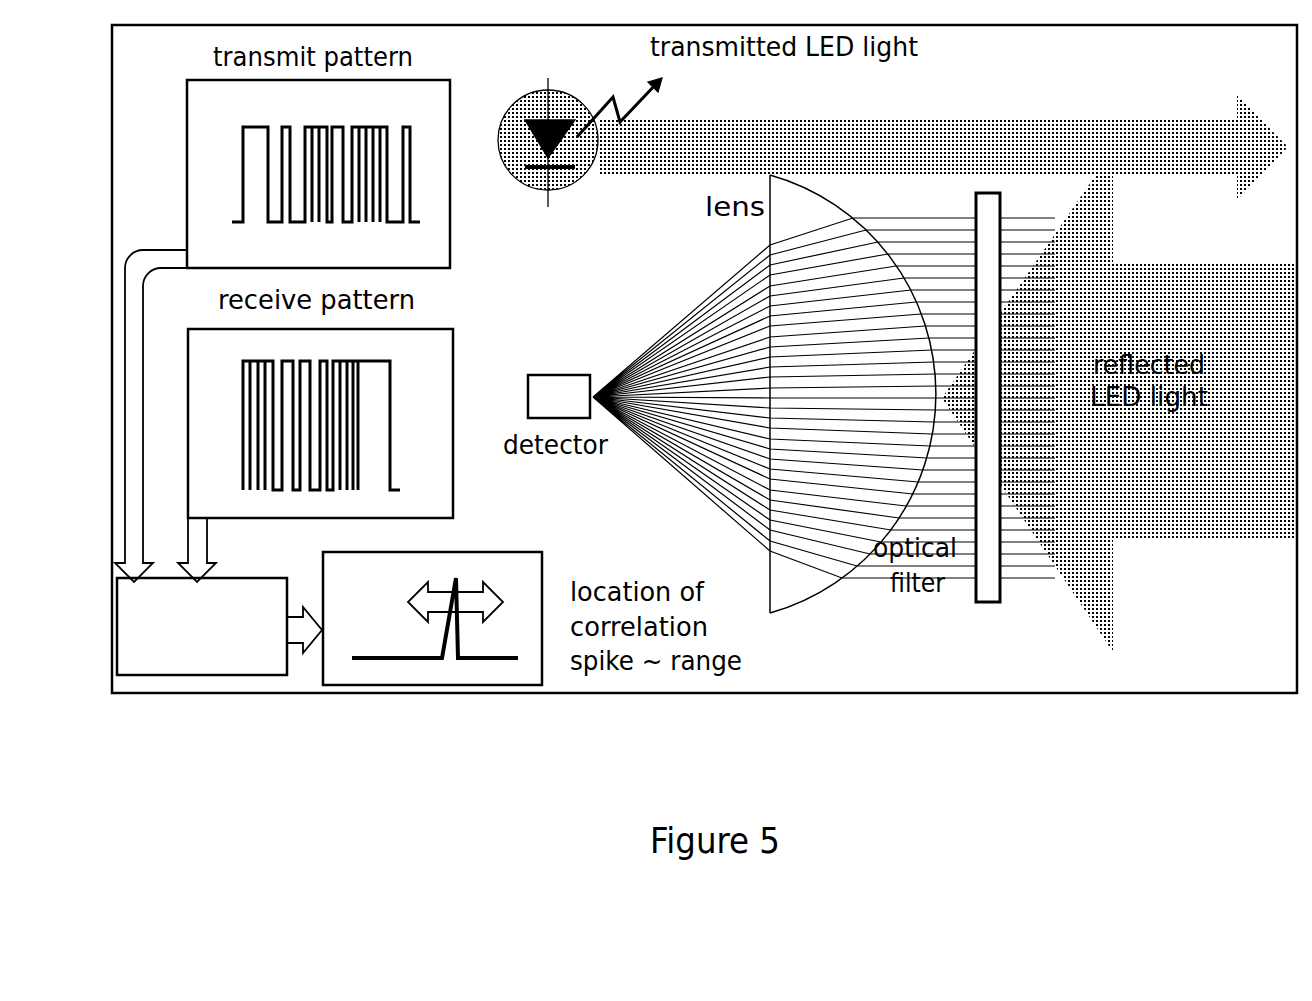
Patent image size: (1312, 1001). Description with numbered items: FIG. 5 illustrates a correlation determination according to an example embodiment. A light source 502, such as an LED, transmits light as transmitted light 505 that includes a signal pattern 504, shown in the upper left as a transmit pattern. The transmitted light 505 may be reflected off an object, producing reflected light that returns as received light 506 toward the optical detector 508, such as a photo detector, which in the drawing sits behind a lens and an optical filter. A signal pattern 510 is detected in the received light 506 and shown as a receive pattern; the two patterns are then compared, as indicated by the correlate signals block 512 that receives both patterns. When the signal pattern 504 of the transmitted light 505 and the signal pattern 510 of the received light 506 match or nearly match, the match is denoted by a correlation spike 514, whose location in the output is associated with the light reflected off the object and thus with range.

The light source 502 is at (532, 90).
The signal pattern 504 is at (285, 127).
The transmitted light 505 is at (962, 123).
The received light 506 is at (1142, 268).
The optical detector 508 is at (560, 372).
The signal pattern 510 is at (265, 361).
The correlate signals block 512 is at (232, 677).
The correlation spike 514 is at (456, 580).